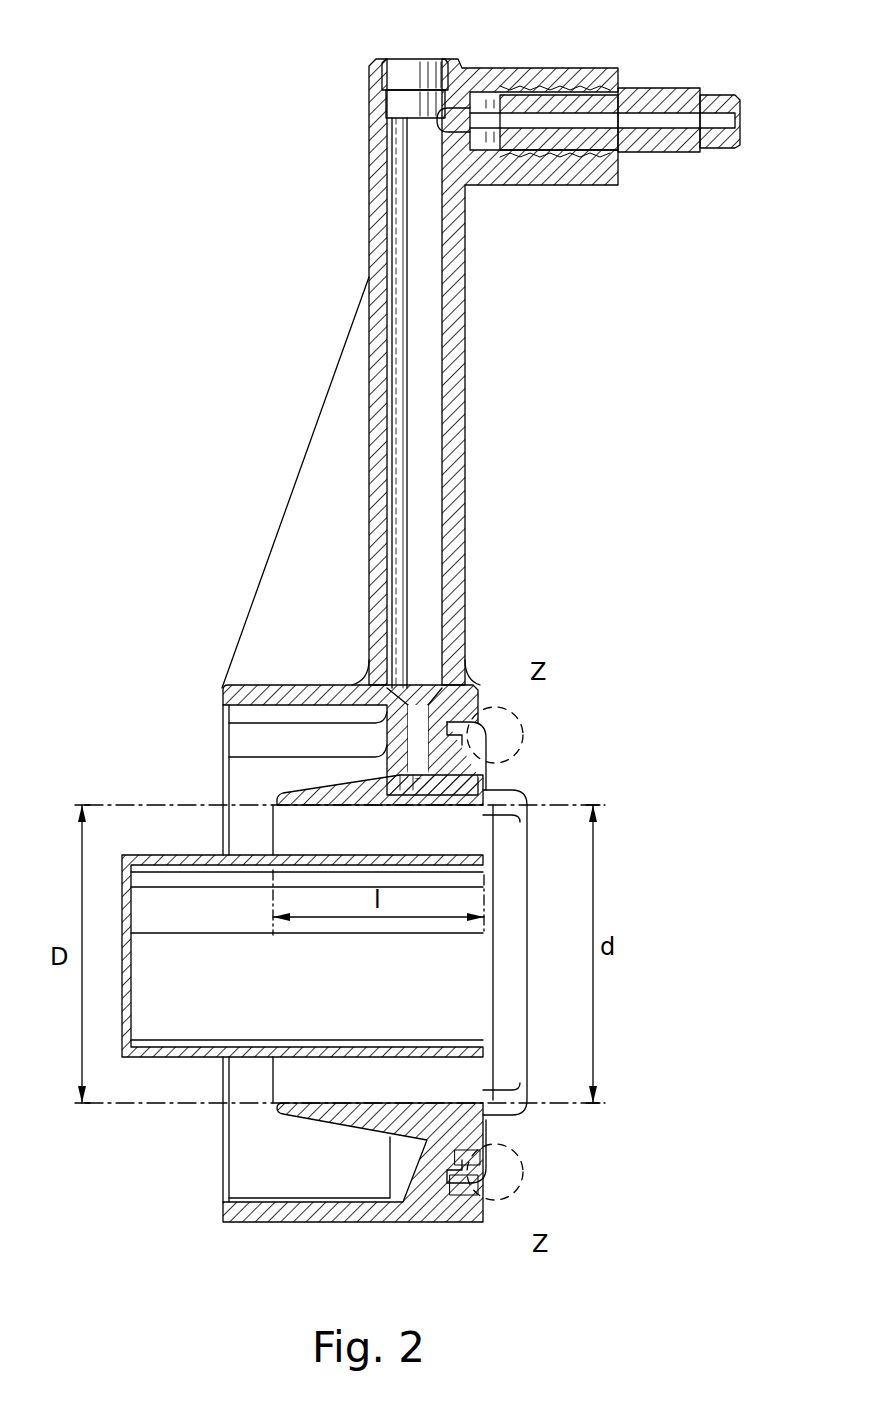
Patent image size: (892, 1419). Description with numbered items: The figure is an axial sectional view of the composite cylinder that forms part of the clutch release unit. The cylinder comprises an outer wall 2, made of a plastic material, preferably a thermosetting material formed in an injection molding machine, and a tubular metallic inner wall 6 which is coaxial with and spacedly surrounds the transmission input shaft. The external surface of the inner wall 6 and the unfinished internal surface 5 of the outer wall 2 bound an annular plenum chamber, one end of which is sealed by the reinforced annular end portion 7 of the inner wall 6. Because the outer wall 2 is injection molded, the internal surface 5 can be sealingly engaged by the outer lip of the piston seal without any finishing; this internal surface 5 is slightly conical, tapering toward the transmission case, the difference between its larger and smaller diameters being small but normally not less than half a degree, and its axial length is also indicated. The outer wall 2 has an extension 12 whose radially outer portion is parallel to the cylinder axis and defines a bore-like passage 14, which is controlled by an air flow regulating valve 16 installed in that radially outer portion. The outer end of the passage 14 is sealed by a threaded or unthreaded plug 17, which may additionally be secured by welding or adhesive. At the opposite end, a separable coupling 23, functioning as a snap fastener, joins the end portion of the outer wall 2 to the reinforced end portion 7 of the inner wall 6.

The outer wall 2 is at (222, 690).
The internal surface 5 is at (455, 1095).
The inner wall 6 is at (190, 1045).
The reinforced annular end portion 7 is at (498, 1137).
The extension 12 is at (474, 437).
The passage 14 is at (422, 380).
The air flow regulating valve 16 is at (648, 100).
The plug 17 is at (410, 72).
The separable coupling 23 is at (532, 1172).